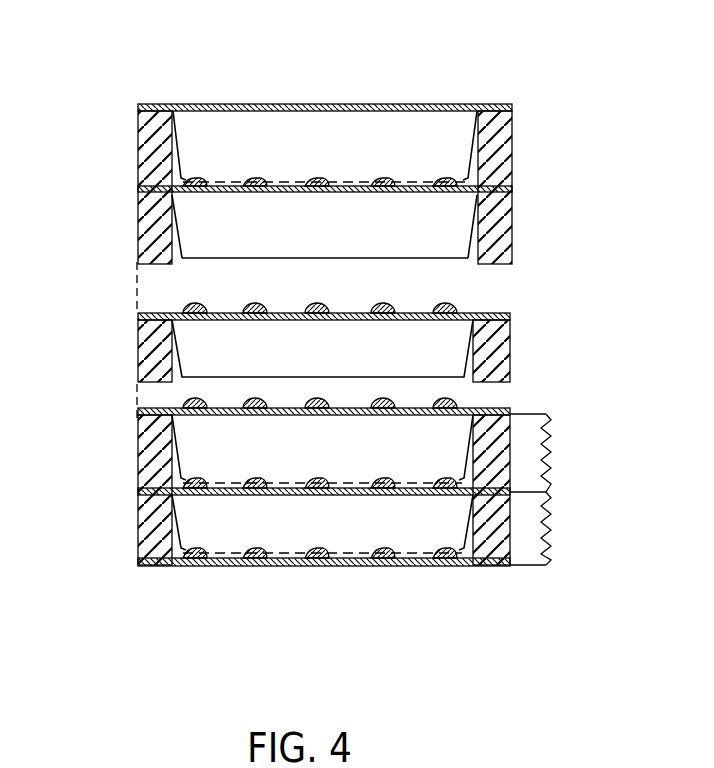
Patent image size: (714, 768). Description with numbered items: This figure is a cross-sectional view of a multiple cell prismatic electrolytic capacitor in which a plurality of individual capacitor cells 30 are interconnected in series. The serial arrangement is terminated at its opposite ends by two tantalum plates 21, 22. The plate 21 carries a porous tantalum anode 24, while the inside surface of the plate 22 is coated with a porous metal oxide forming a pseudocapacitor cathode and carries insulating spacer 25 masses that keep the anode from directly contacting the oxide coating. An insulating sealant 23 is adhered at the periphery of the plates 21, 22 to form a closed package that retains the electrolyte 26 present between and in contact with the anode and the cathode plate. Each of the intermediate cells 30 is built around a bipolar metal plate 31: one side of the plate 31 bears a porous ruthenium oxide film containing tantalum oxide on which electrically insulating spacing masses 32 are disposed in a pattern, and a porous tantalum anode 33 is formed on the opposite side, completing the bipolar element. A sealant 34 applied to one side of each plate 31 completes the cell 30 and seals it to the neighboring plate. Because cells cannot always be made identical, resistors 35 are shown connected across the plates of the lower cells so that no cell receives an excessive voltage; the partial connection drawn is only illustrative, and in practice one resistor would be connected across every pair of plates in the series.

The metal plate 21 is at (410, 106).
The metal plate 22 is at (458, 565).
The insulating sealant 23 is at (507, 153).
The porous tantalum anode 24 is at (217, 135).
The spacer 25 is at (195, 566).
The electrolyte 26 is at (342, 566).
The capacitor cell 30 is at (549, 310).
The bipolar metal plate 31 is at (157, 313).
The spacing masses 32 is at (378, 305).
The porous tantalum anode 33 is at (202, 358).
The sealant 34 is at (143, 347).
The resistors 35 is at (551, 456).